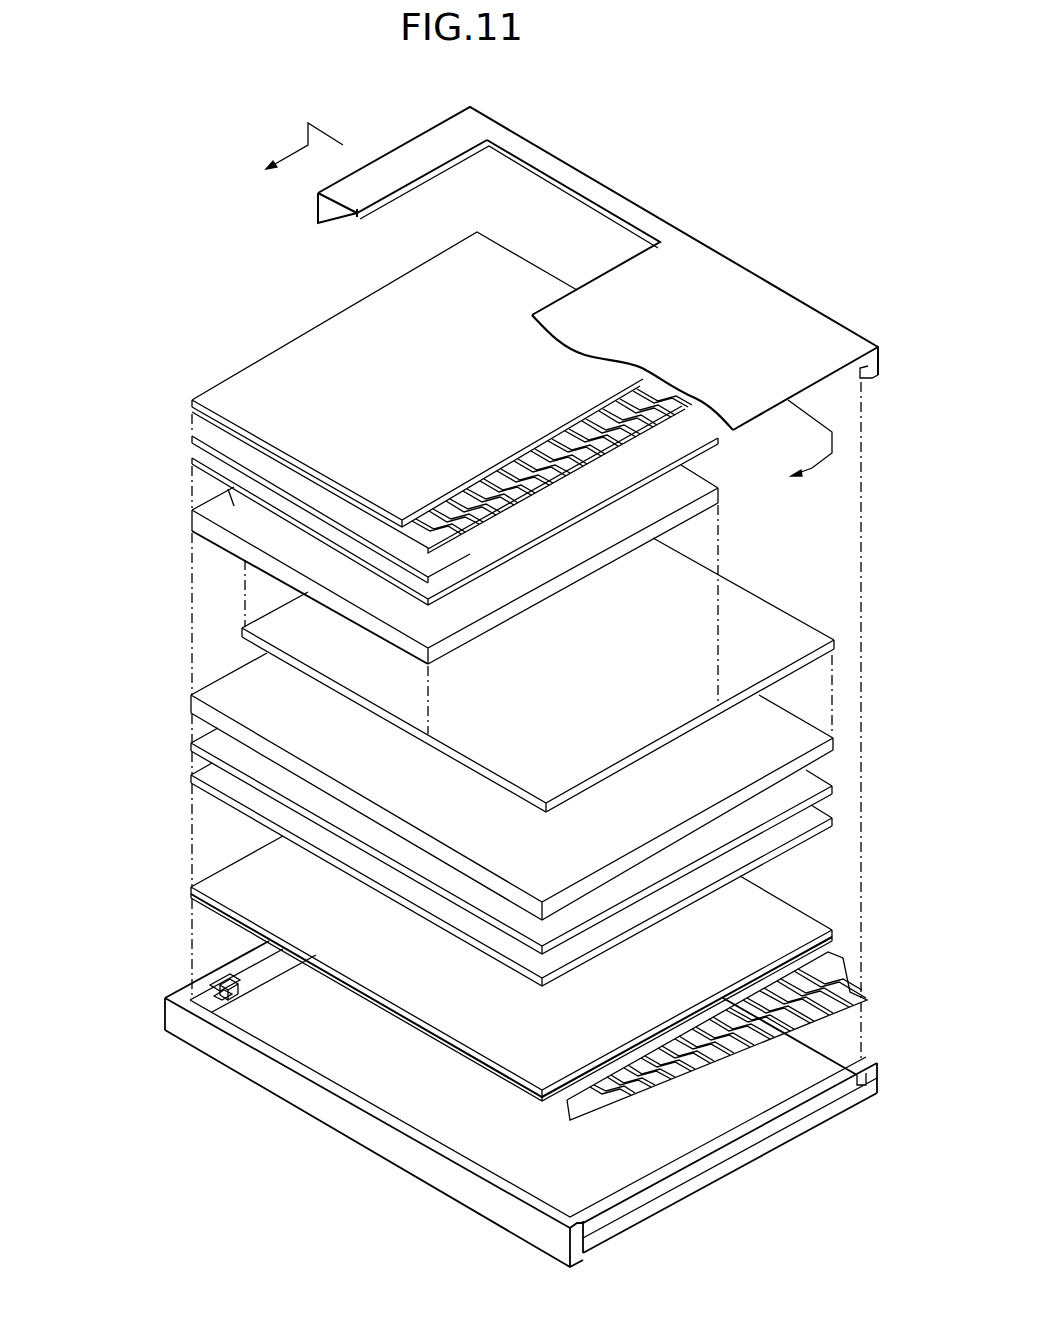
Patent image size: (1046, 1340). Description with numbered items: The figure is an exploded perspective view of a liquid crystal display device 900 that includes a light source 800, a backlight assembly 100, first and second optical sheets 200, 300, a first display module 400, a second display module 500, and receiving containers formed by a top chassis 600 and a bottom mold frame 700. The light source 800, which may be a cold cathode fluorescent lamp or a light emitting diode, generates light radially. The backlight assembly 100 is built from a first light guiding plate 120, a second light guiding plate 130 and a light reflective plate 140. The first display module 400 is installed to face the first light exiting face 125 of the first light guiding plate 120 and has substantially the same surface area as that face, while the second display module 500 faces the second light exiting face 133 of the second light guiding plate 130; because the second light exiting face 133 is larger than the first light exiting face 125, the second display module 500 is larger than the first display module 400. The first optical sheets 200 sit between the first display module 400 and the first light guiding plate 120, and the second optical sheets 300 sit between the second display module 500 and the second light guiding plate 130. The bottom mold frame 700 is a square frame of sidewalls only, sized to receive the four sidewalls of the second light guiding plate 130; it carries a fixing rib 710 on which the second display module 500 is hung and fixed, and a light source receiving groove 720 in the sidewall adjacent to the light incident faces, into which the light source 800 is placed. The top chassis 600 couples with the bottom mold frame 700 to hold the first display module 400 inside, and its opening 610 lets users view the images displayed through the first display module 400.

The backlight assembly 100 is at (103, 537).
The first light guiding plate 120 is at (187, 527).
The first light exiting face 125 is at (230, 487).
The second light guiding plate 130 is at (185, 700).
The second light exiting face 133 is at (227, 740).
The light reflective plate 140 is at (237, 628).
The first optical sheets 200 is at (187, 462).
The second optical sheets 300 is at (185, 787).
The first display module 400 is at (195, 375).
The second display module 500 is at (185, 893).
The top chassis 600 is at (543, 268).
The opening 610 is at (532, 190).
The bottom mold frame 700 is at (477, 1104).
The fixing rib 710 is at (225, 1000).
The light source receiving groove 720 is at (212, 973).
The light source 800 is at (205, 987).
The liquid crystal display device 900 is at (715, 155).